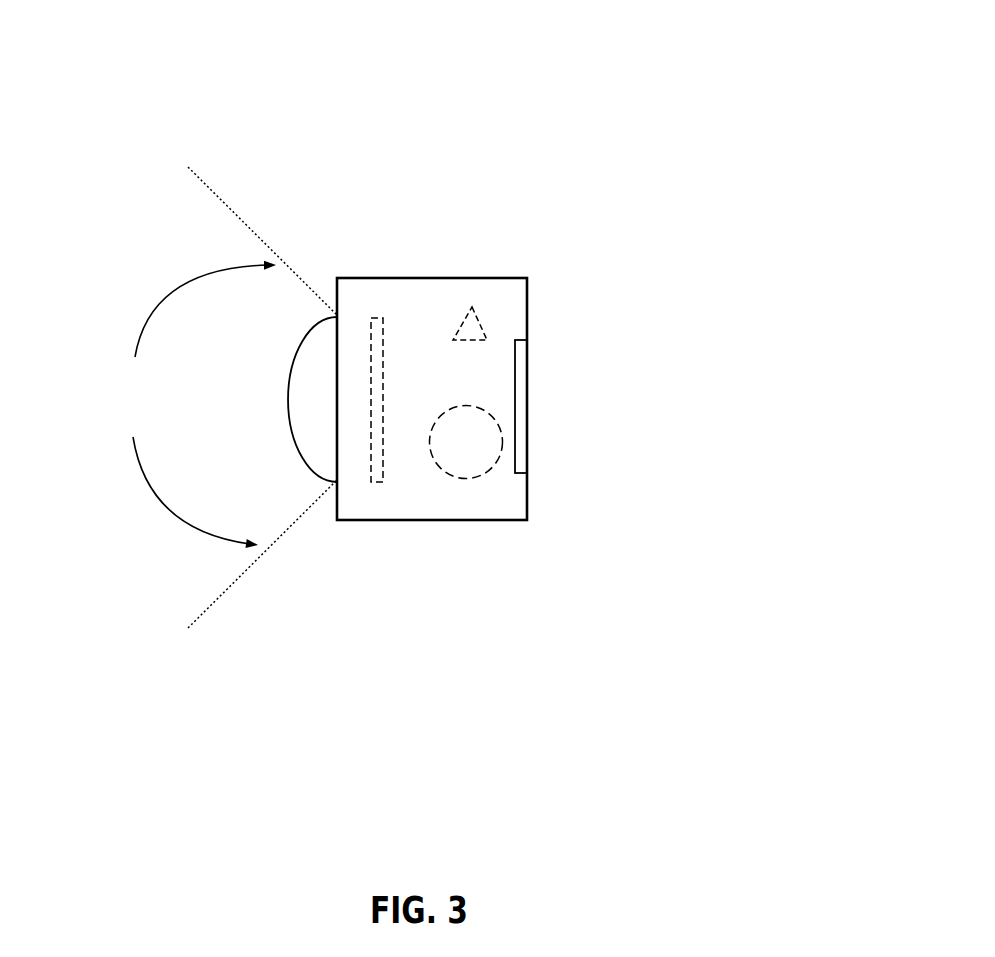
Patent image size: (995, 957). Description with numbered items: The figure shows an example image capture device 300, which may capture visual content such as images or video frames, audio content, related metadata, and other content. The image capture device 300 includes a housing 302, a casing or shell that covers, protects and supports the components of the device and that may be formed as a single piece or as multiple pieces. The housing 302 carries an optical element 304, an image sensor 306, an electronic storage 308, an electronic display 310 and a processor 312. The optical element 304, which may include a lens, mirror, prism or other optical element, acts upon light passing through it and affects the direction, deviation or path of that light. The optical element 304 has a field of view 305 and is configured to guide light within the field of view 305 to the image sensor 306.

The image capture device 300 is at (493, 140).
The housing 302 is at (442, 520).
The optical element 304 is at (310, 467).
The field of view 305 is at (188, 397).
The image sensor 306 is at (380, 318).
The electronic storage 308 is at (487, 340).
The electronic display 310 is at (527, 418).
The processor 312 is at (503, 442).